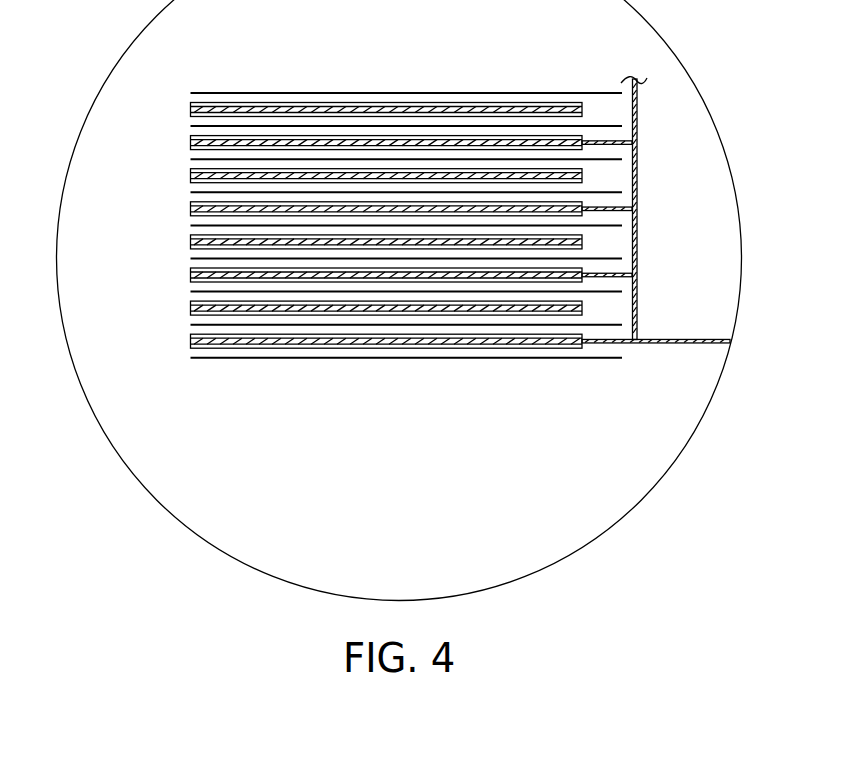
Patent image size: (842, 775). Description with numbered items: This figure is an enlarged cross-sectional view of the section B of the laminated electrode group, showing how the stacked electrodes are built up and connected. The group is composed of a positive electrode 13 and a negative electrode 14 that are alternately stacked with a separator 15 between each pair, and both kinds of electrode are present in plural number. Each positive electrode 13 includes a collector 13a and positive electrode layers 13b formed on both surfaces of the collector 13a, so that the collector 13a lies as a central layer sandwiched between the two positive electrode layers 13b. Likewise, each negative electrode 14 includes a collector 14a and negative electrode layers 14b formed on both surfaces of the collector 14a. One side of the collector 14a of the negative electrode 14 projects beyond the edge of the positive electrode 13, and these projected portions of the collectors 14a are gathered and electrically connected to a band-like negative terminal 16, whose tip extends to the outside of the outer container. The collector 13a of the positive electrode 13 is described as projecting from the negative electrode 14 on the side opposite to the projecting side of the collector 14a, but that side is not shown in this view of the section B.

The positive electrode 13 is at (326, 232).
The collector 13a is at (192, 308).
The positive electrode layers 13b is at (192, 302).
The negative electrode 14 is at (422, 259).
The collector 14a is at (436, 244).
The negative electrode layers 14b is at (191, 335).
The separator 15 is at (462, 92).
The band-like negative terminal 16 is at (680, 345).
The section B is at (633, 508).